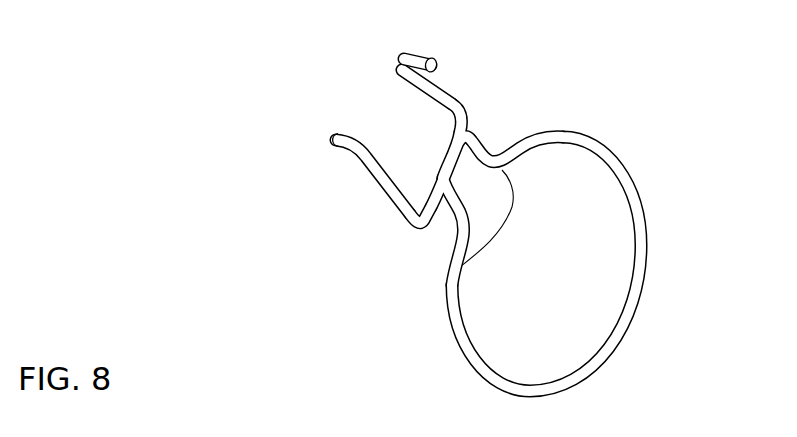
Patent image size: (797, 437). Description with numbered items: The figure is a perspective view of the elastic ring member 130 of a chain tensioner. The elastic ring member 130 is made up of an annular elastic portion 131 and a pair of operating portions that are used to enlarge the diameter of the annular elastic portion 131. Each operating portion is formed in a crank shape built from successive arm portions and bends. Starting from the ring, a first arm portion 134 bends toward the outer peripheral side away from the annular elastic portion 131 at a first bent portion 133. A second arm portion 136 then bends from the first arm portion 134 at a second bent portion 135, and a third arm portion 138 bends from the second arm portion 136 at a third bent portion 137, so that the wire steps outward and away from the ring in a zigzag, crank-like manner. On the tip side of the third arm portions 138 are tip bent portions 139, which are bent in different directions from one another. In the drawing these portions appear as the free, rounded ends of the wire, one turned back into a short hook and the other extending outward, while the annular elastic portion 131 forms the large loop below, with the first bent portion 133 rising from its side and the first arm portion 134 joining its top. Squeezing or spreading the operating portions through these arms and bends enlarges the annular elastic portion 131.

The elastic ring member 130 is at (225, 105).
The annular elastic portion 131 is at (632, 313).
The first bent portion 133 is at (470, 253).
The first arm portion 134 is at (485, 150).
The second bent portion 135 is at (465, 132).
The second arm portion 136 is at (443, 177).
The third bent portion 137 is at (465, 97).
The third arm portion 138 is at (450, 84).
The tip bent portion 139 is at (400, 58).